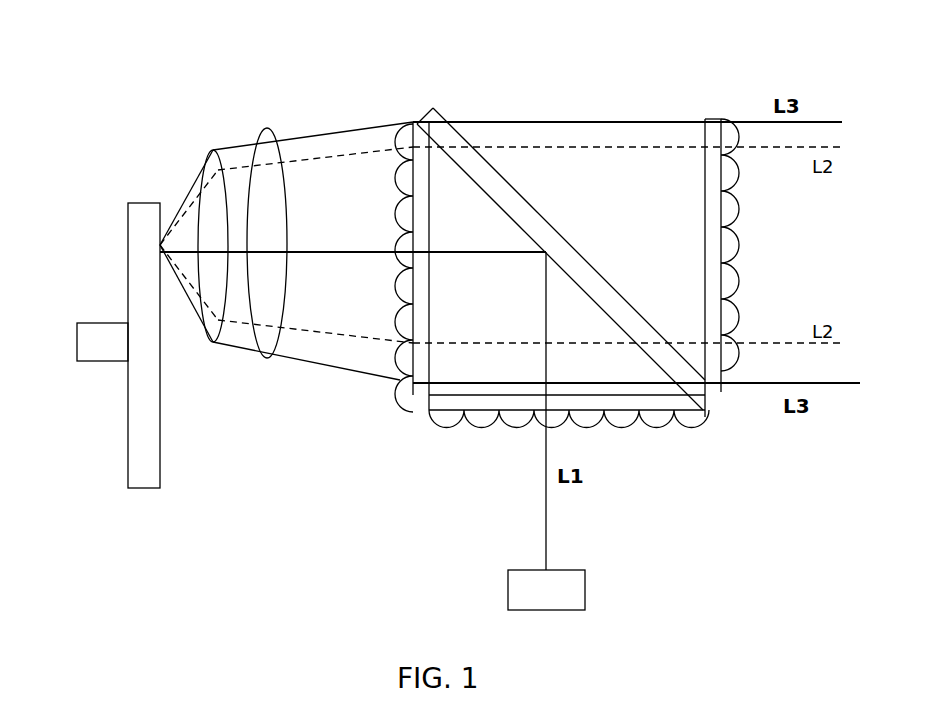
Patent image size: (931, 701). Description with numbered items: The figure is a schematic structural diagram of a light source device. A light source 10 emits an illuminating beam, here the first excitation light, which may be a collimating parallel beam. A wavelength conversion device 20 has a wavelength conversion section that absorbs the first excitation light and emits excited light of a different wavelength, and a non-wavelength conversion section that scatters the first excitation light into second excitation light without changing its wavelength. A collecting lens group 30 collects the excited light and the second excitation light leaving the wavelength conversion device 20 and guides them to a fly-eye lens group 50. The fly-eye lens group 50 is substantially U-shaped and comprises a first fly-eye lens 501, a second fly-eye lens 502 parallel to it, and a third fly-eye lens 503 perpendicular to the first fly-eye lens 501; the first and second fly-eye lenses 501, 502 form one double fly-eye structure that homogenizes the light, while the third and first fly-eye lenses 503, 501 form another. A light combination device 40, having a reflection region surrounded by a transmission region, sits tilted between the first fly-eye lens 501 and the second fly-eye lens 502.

The light source 10 is at (568, 570).
The wavelength conversion device 20 is at (128, 398).
The collecting lens group 30 is at (268, 133).
The light combination device 40 is at (476, 156).
The fly-eye lens group 50 is at (545, 282).
The first fly-eye lens 501 is at (402, 343).
The second fly-eye lens 502 is at (704, 152).
The third fly-eye lens 503 is at (703, 420).